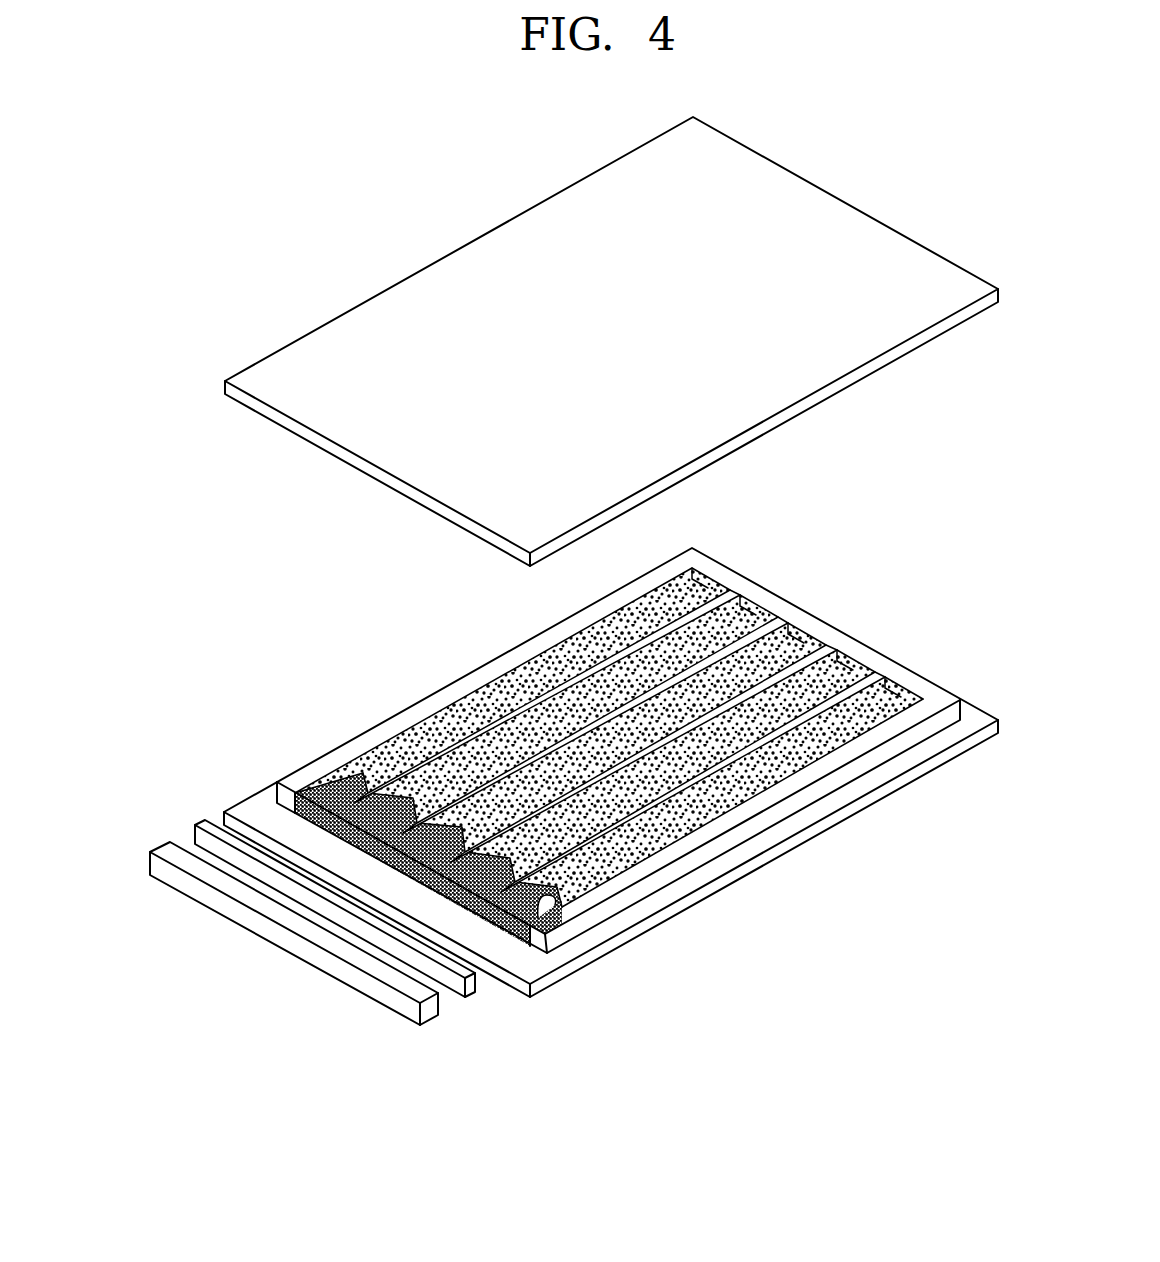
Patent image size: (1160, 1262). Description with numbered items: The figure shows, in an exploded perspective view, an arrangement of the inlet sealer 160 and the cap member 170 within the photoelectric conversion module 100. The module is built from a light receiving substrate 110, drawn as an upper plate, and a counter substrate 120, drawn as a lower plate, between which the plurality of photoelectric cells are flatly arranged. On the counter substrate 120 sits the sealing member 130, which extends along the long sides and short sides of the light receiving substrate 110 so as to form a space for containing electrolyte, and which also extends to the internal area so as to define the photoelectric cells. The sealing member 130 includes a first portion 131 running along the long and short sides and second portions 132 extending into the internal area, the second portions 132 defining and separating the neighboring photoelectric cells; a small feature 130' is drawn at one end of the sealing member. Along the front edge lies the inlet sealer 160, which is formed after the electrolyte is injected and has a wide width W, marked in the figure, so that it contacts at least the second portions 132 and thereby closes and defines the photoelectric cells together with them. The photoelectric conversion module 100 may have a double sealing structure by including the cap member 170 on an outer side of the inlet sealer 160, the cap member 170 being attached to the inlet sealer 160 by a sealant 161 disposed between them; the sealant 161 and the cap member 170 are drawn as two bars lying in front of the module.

The photoelectric conversion module 100 is at (416, 226).
The light receiving substrate 110 is at (918, 258).
The counter substrate 120 is at (857, 804).
The sealing member 130 is at (618, 844).
The protrusion 130' is at (623, 955).
The first portion 131 is at (680, 848).
The second portion 132 is at (686, 790).
The inlet sealer 160 is at (345, 782).
The sealant 161 is at (470, 1000).
The cap member 170 is at (432, 1015).